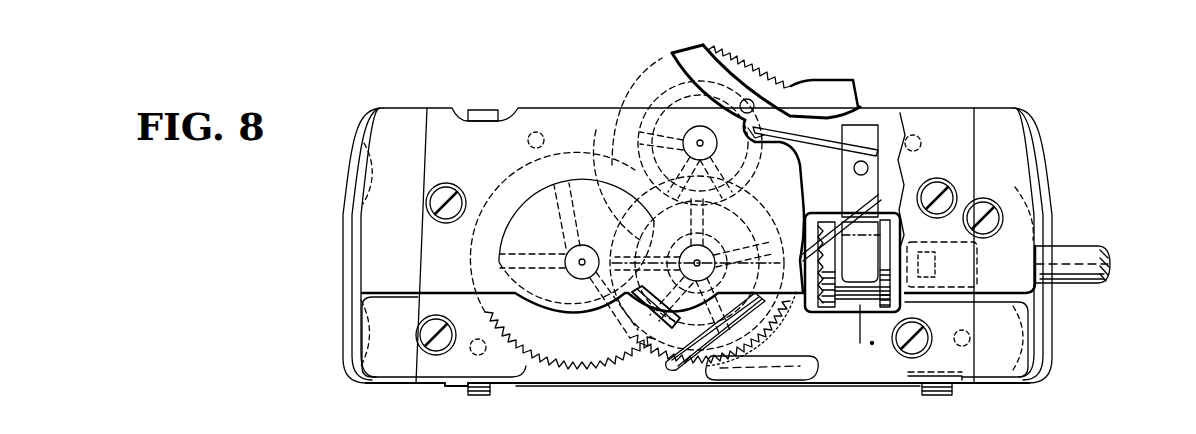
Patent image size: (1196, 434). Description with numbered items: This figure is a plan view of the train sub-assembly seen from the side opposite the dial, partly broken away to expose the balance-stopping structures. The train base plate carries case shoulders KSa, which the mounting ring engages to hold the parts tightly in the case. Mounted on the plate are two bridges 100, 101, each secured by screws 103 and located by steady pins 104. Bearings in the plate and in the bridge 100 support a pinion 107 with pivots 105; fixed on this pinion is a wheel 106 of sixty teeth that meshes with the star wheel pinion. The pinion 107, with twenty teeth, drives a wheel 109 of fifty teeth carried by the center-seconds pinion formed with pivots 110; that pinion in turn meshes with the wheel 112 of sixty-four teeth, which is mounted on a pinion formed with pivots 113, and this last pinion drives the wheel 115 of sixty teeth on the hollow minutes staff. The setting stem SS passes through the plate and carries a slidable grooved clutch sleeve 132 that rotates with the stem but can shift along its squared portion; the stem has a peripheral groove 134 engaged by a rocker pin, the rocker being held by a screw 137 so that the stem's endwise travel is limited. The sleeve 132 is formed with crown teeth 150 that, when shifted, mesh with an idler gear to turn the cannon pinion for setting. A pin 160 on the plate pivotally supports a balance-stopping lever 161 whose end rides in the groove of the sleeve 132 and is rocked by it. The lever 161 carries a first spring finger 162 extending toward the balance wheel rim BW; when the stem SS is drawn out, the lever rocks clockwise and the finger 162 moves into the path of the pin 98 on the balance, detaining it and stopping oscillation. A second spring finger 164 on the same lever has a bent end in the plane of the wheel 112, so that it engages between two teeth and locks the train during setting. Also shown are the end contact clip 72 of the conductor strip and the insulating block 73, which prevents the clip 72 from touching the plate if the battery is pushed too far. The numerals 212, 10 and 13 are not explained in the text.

The bridge 100 is at (565, 109).
The bridge 101 is at (450, 378).
The end contact clip 72 is at (491, 393).
The mounting boss 212 is at (931, 393).
The insulating block 73 is at (968, 376).
The screw 103 is at (500, 190).
The steady pin 104 is at (527, 142).
The wheel 112 is at (583, 368).
The pivots 113 is at (582, 262).
The pivots 110 is at (692, 268).
The wheel 115 is at (633, 368).
The second spring finger 164 is at (823, 216).
The crown teeth 150 is at (822, 314).
The wheel 109 is at (745, 322).
The pivots 105 is at (700, 141).
The pinion 107 is at (622, 110).
The wheel 106 is at (655, 74).
The balance wheel rim BW is at (718, 68).
The pin 98 is at (754, 100).
The first spring finger 162 is at (814, 95).
The pin 160 is at (868, 170).
The balance-stopping lever 161 is at (870, 190).
The screw 137 is at (952, 193).
The clutch sleeve 132 is at (836, 264).
The peripheral groove 134 is at (932, 275).
The setting stem SS is at (1077, 248).
The case shoulders KSa is at (345, 216).
The section line 10 is at (290, 228).
The section line 13 is at (865, 115).